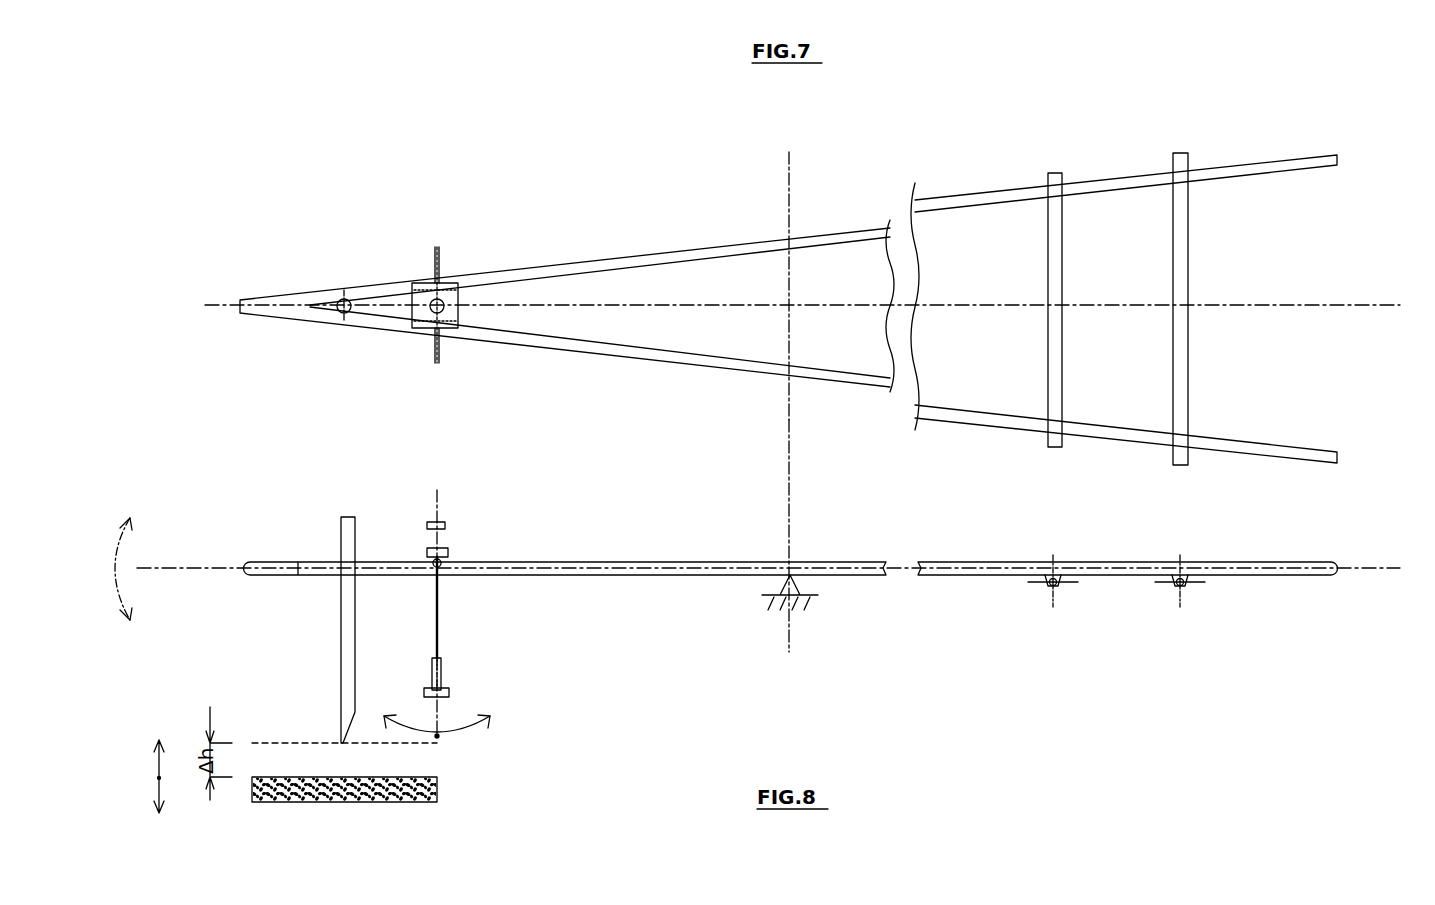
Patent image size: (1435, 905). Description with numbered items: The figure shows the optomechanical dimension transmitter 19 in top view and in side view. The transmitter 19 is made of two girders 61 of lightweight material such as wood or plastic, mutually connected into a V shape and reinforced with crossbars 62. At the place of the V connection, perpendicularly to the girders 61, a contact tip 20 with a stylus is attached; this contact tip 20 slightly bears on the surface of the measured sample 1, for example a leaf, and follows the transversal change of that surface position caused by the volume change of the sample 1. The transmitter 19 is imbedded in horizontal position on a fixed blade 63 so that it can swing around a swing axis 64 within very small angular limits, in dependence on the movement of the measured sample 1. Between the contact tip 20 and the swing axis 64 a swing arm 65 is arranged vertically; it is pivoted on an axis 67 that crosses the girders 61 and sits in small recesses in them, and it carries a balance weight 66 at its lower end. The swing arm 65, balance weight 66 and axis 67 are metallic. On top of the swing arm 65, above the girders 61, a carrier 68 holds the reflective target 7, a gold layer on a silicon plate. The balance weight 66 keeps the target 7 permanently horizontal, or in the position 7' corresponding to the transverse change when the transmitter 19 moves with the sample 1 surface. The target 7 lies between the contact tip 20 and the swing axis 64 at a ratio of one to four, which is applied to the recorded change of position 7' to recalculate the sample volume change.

In FIG. 8, the measured sample 1 is at (270, 797).
In FIG. 7, the reflective target 7 is at (463, 267).
In FIG. 8, the reflective target 7 is at (405, 507).
In FIG. 8, the position of the reflective target 7' is at (417, 471).
In FIG. 7, the optomechanical dimension transmitter 19 is at (634, 212).
In FIG. 8, the optomechanical dimension transmitter 19 is at (588, 516).
In FIG. 7, the contact tip 20 is at (350, 297).
In FIG. 8, the contact tip 20 is at (350, 660).
In FIG. 7, the girders 61 is at (845, 233).
In FIG. 8, the girders 61 is at (650, 568).
In FIG. 7, the crossbars 62 is at (1053, 275).
In FIG. 8, the crossbars 62 is at (1057, 588).
In FIG. 8, the fixed blade 63 is at (787, 580).
In FIG. 7, the swing axis 64 is at (789, 185).
In FIG. 8, the swing arm 65 is at (439, 627).
In FIG. 8, the balance weight 66 is at (450, 690).
In FIG. 7, the axis 67 is at (440, 257).
In FIG. 8, the axis 67 is at (433, 573).
In FIG. 7, the carrier 68 is at (447, 311).
In FIG. 8, the carrier 68 is at (432, 567).